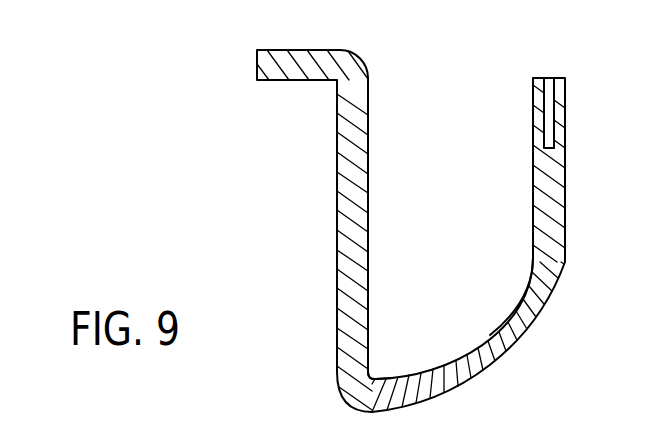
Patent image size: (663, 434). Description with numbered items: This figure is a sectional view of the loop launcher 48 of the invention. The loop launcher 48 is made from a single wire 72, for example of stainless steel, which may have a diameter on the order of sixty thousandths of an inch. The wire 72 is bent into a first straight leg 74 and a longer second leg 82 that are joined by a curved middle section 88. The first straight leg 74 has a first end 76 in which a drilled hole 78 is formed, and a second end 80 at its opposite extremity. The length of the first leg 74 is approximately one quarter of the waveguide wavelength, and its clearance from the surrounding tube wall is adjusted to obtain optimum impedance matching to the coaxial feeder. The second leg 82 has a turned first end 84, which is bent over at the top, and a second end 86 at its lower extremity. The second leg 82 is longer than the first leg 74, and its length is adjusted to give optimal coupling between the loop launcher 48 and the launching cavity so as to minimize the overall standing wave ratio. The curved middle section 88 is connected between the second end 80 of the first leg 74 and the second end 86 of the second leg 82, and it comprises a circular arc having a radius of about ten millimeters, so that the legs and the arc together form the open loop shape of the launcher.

The loop launcher 48 is at (323, 250).
The wire 72 is at (374, 173).
The first straight leg 74 is at (533, 162).
The first end 76 is at (538, 78).
The drilled hole 78 is at (549, 78).
The second end 80 is at (531, 258).
The second leg 82 is at (368, 217).
The turned first end 84 is at (345, 75).
The second end 86 is at (371, 378).
The curved middle section 88 is at (468, 352).